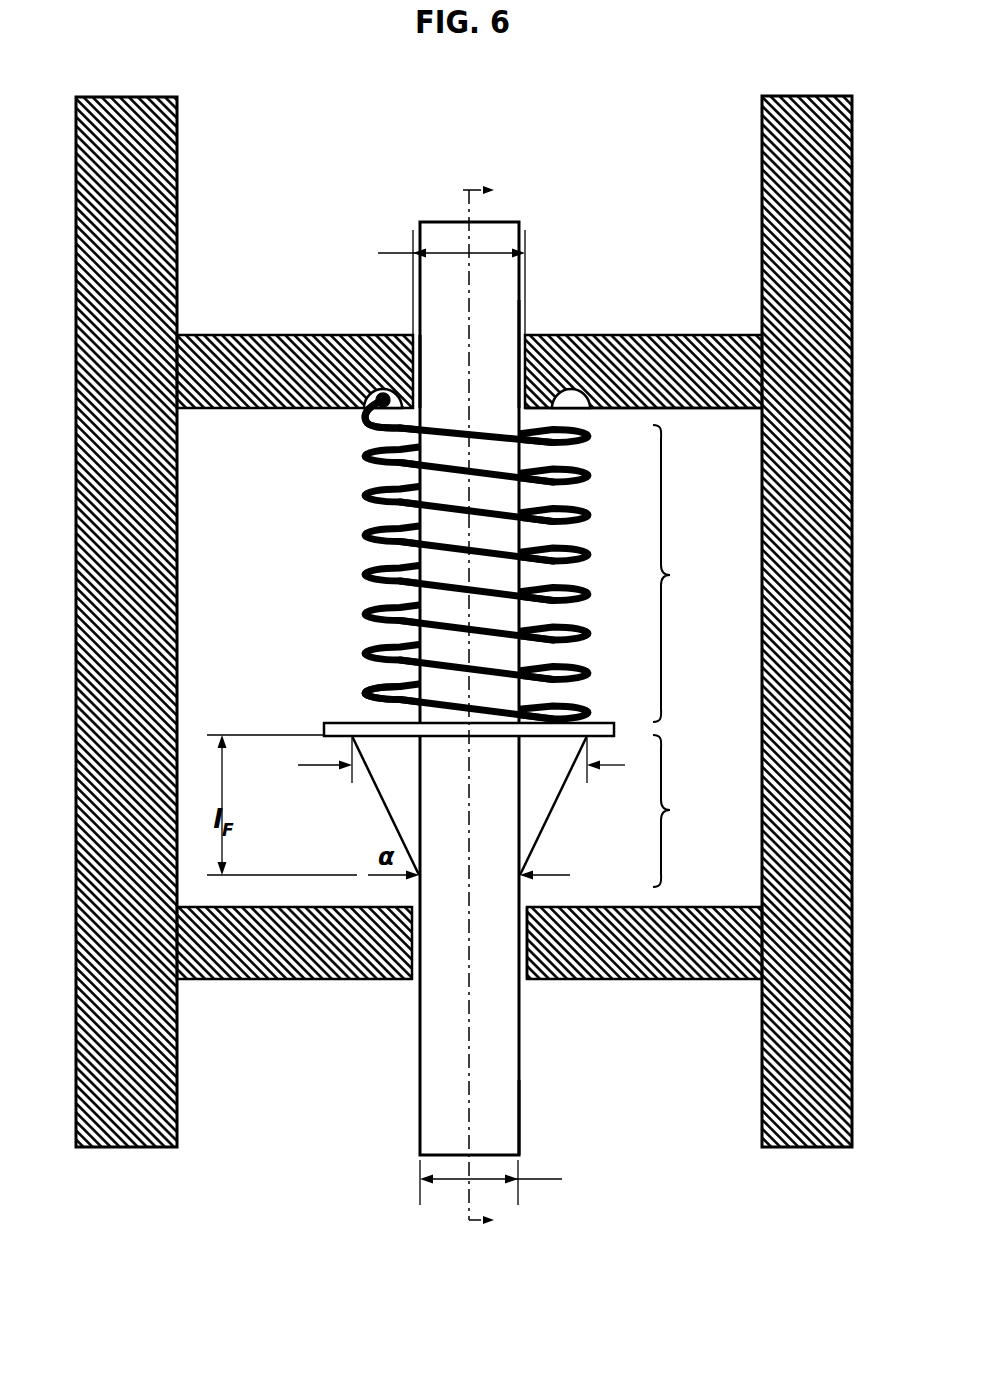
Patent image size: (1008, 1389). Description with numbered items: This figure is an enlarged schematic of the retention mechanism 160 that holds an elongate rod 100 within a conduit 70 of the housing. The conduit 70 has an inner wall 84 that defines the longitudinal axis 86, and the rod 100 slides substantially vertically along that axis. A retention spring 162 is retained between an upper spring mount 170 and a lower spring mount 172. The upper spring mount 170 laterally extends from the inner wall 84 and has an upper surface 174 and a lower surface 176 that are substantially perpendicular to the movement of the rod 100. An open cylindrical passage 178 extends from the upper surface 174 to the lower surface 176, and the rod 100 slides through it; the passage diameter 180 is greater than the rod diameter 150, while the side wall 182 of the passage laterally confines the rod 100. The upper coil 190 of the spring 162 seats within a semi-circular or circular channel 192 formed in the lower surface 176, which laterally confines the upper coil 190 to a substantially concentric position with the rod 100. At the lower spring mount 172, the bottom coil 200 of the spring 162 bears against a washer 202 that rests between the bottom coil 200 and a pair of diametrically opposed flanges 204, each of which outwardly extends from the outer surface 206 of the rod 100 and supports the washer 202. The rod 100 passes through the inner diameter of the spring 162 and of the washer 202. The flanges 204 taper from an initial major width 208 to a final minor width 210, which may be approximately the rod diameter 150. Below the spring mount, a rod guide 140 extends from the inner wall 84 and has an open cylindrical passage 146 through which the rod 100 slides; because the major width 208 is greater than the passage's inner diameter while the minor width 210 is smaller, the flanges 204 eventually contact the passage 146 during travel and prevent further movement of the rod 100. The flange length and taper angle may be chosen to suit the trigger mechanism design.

The conduit 70 is at (656, 185).
The inner wall 84 is at (178, 1113).
The longitudinal axis 86 is at (468, 206).
The elongate rod 100 is at (428, 1124).
The rod guide 140 is at (303, 980).
The open cylindrical passage 146 is at (534, 992).
The rod diameter 150 is at (510, 1182).
The retention mechanism 160 is at (285, 192).
The retention spring 162 is at (684, 573).
The upper spring mount 170 is at (403, 556).
The lower spring mount 172 is at (684, 811).
The upper surface 174 is at (259, 335).
The lower surface 176 is at (714, 408).
The open cylindrical passage 178 is at (533, 323).
The passage diameter 180 is at (431, 282).
The side wall 182 is at (432, 358).
The upper coil 190 is at (367, 423).
The channel 192 is at (574, 400).
The bottom coil 200 is at (372, 698).
The washer 202 is at (325, 727).
The flanges 204 is at (397, 798).
The outer surface 206 is at (518, 1127).
The major width 208 is at (440, 760).
The minor width 210 is at (564, 877).